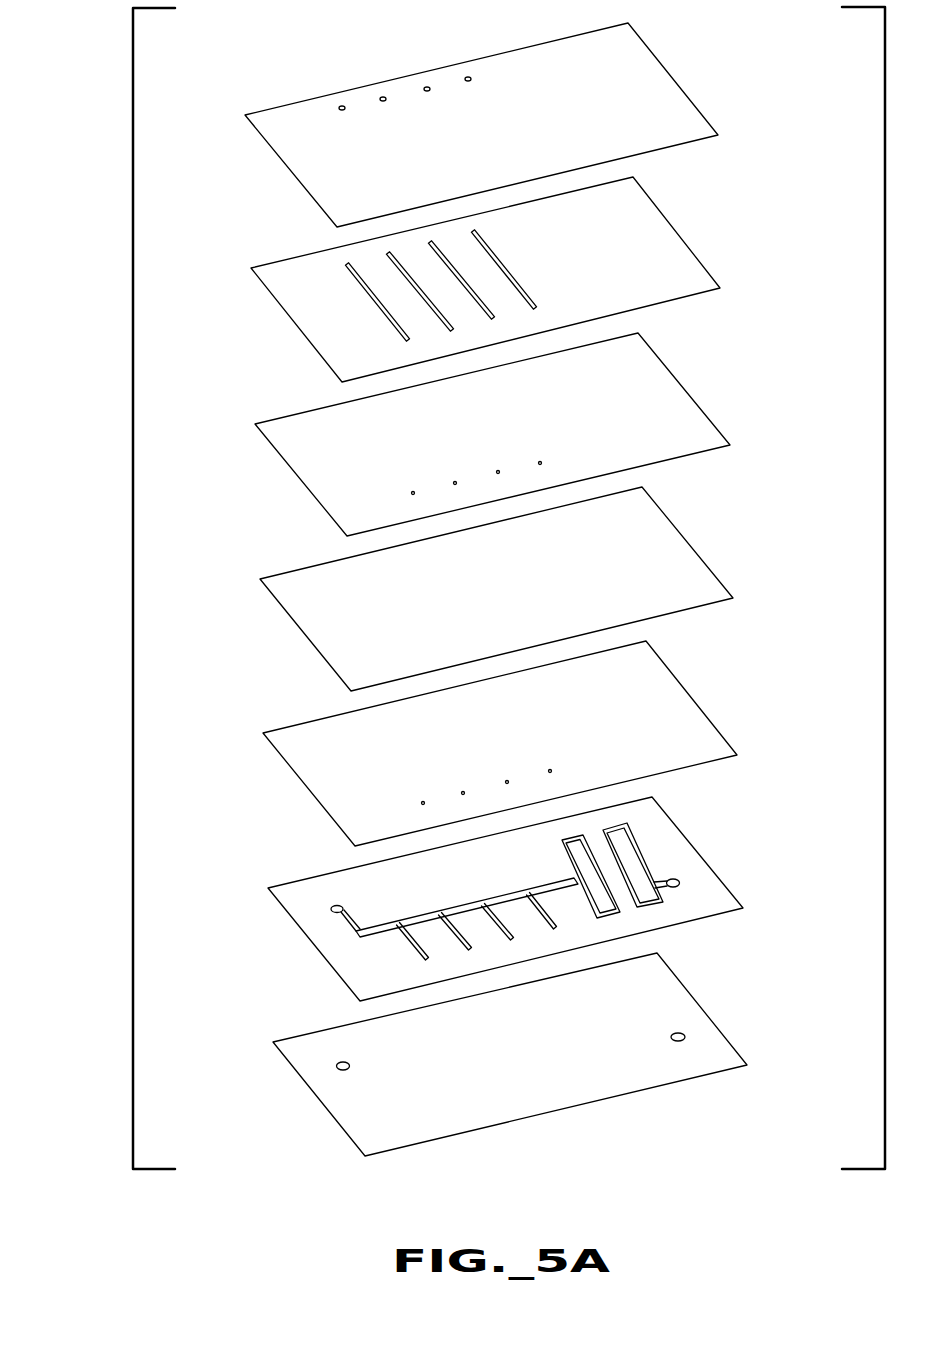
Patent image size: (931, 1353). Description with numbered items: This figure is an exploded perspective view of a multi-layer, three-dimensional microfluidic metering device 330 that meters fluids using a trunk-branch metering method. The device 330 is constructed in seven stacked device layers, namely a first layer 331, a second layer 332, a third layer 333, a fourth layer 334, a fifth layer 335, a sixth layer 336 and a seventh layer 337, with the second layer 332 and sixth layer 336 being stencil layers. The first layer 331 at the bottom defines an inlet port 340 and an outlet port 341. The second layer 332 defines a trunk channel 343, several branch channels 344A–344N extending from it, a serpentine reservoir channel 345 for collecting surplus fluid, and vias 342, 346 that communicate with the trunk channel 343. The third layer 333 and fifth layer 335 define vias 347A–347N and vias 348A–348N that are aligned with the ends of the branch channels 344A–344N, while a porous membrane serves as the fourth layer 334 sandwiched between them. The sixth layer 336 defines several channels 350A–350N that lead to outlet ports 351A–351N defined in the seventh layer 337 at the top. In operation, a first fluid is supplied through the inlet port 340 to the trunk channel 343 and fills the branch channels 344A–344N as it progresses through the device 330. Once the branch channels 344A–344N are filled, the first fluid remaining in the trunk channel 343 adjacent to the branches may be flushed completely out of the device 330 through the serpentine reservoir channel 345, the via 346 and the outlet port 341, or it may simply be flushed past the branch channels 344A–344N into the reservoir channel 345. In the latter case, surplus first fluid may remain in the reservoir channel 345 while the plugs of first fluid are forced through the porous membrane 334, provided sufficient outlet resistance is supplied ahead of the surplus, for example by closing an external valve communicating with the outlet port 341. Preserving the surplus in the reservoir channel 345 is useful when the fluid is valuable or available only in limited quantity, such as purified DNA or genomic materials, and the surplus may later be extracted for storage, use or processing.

The microfluidic metering device 330 is at (124, 590).
The first layer 331 is at (735, 1061).
The second layer 332 is at (727, 903).
The third layer 333 is at (720, 748).
The fourth layer 334 is at (717, 596).
The fifth layer 335 is at (716, 440).
The sixth layer 336 is at (708, 288).
The seventh layer 337 is at (712, 133).
The inlet port 340 is at (339, 1062).
The outlet port 341 is at (681, 1032).
The via 342 is at (331, 909).
The trunk channel 343 is at (417, 917).
The first branch channel 344A is at (427, 957).
The nth branch channel 344N is at (555, 920).
The serpentine reservoir channel 345 is at (637, 835).
The via 346 is at (679, 879).
The first via 347A is at (423, 803).
The nth via 347N is at (550, 770).
The first via 348A is at (413, 493).
The nth via 348N is at (540, 463).
The first channel 350A is at (347, 264).
The nth channel 350N is at (493, 250).
The first outlet port 351A is at (342, 105).
The nth outlet port 351N is at (468, 76).